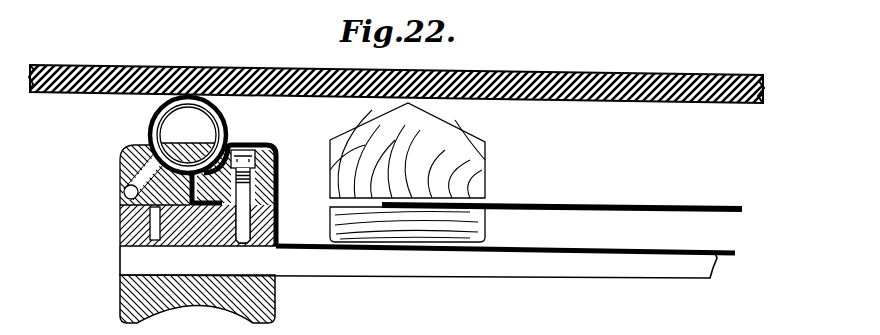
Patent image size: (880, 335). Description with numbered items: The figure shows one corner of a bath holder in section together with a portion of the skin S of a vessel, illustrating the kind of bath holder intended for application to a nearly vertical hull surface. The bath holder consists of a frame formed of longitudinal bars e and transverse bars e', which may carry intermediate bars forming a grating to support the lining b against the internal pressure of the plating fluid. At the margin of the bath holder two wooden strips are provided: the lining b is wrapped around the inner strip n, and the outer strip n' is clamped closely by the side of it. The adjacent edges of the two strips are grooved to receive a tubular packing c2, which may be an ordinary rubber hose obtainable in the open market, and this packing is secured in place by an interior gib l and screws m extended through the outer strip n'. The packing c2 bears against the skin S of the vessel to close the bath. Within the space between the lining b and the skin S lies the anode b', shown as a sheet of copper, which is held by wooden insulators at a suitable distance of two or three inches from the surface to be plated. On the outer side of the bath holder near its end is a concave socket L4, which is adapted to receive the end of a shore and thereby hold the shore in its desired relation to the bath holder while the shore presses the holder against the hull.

The skin of the vessel S is at (705, 78).
The interior gib l is at (193, 146).
The tubular packing c2 is at (226, 128).
The outer wooden strip n' is at (138, 175).
The screws m is at (128, 190).
The transverse bars e' is at (179, 225).
The longitudinal bars e is at (401, 262).
The inner wooden strip n is at (247, 195).
The lining b is at (505, 237).
The anode b' is at (536, 172).
The concave socket L4 is at (198, 305).